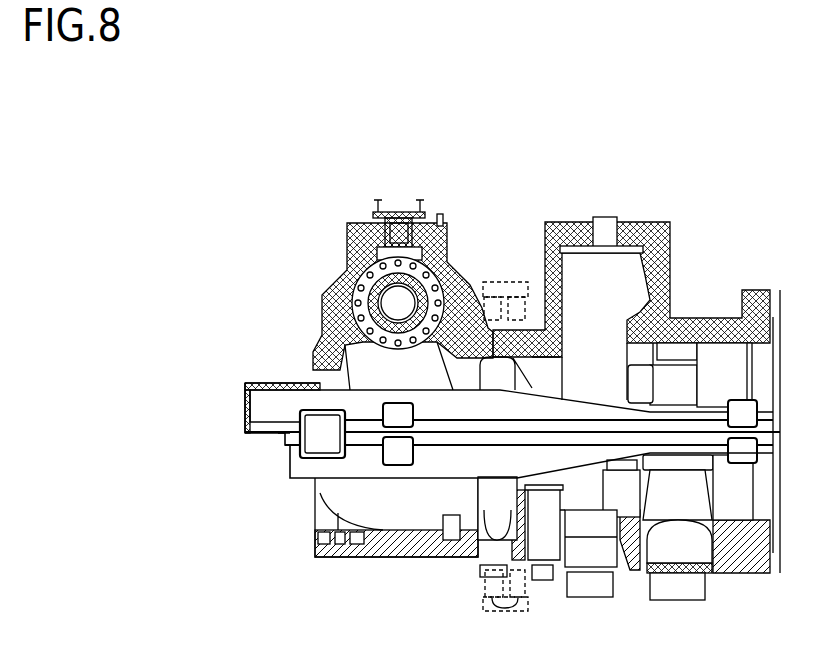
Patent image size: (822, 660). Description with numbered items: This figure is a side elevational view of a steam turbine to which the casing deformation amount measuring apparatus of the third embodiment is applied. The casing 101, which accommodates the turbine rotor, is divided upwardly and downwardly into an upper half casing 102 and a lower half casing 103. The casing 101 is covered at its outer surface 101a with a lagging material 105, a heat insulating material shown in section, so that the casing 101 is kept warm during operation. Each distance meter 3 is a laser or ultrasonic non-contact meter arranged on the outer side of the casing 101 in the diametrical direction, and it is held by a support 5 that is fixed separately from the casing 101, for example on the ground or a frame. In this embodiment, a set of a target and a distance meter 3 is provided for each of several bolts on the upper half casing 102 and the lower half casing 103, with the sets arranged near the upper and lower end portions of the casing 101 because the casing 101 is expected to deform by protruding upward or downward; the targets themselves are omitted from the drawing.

The distance meter 3 is at (488, 291).
The support 5 is at (503, 281).
The casing 101 is at (283, 459).
The outer surface 101a is at (711, 333).
The upper half casing 102 is at (290, 383).
The lower half casing 103 is at (300, 481).
The lagging material 105 is at (327, 288).